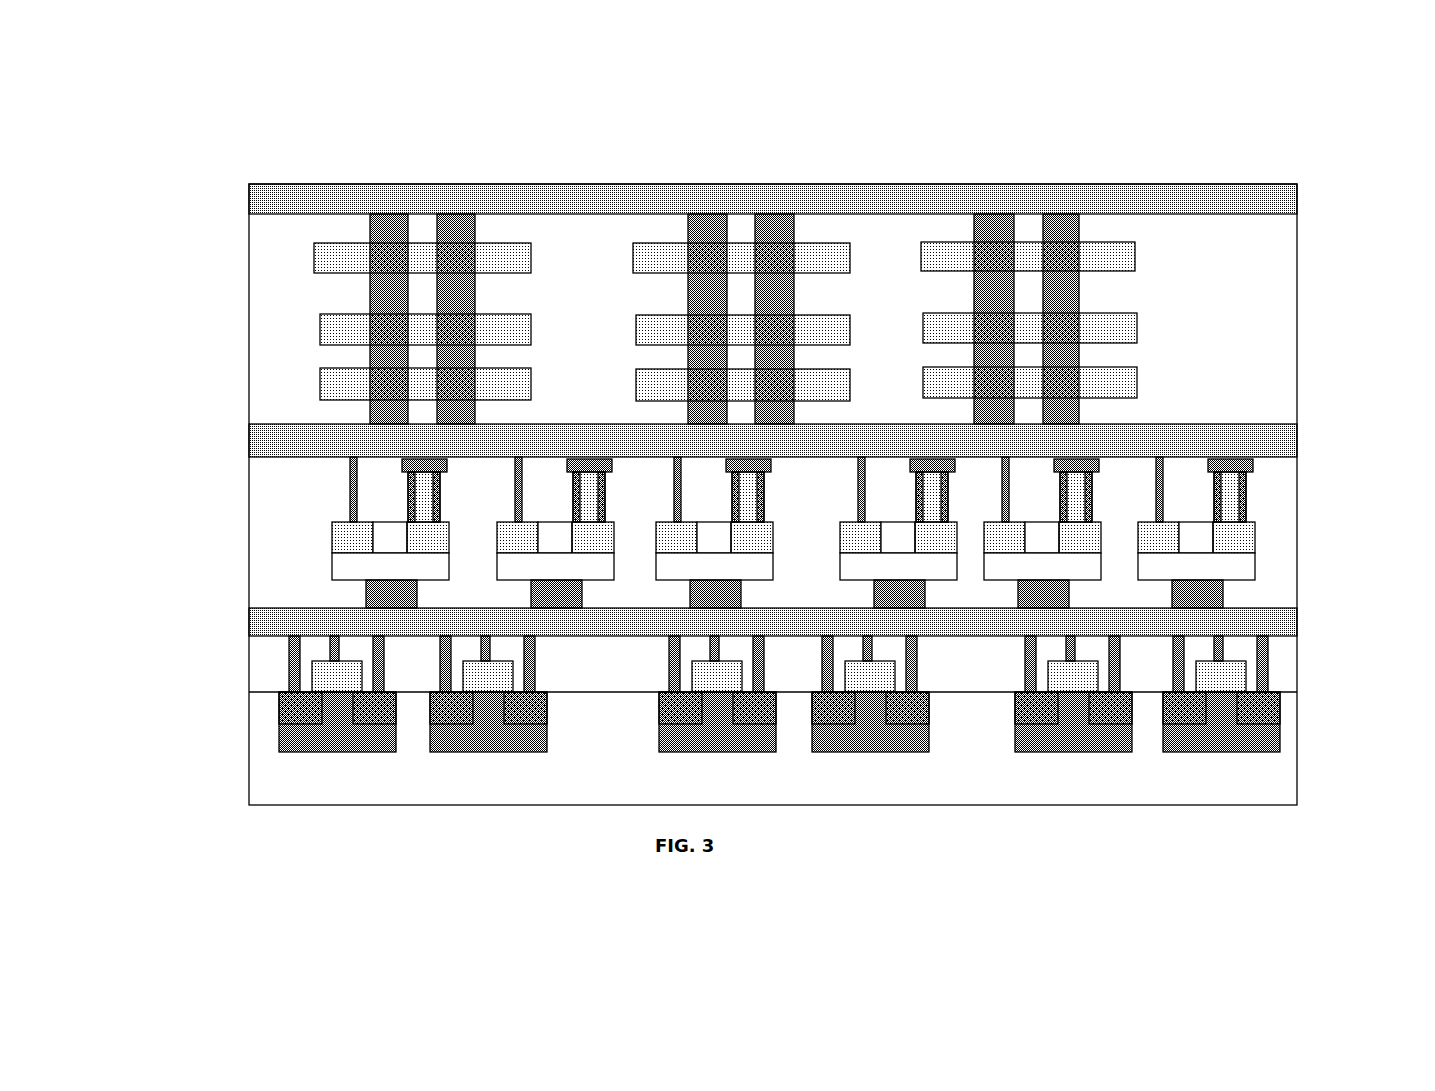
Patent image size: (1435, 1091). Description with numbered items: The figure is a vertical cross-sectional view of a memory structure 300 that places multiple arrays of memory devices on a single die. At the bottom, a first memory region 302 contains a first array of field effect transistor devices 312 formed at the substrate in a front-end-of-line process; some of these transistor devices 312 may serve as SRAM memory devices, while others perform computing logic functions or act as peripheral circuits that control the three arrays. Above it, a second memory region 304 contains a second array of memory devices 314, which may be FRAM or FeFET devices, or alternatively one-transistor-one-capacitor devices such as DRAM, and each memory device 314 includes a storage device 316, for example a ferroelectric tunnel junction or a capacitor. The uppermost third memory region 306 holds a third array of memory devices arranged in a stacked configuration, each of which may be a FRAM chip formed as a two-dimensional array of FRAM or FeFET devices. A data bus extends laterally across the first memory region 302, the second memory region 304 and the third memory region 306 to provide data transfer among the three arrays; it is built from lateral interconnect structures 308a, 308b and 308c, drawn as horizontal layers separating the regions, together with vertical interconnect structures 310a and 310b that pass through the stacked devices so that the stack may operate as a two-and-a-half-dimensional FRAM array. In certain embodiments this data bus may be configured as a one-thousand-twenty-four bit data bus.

The memory structure 300 is at (693, 52).
The first memory region 302 is at (820, 721).
The second memory region 304 is at (883, 501).
The third memory region 306 is at (849, 254).
The lateral interconnect structure 308a is at (248, 621).
The lateral interconnect structure 308b is at (248, 441).
The lateral interconnect structure 308c is at (248, 203).
The vertical interconnect structure 310a is at (466, 209).
The vertical interconnect structure 310b is at (391, 209).
The field effect transistor devices 312 is at (835, 694).
The memory devices 314 is at (1316, 608).
The storage device 316 is at (1251, 496).